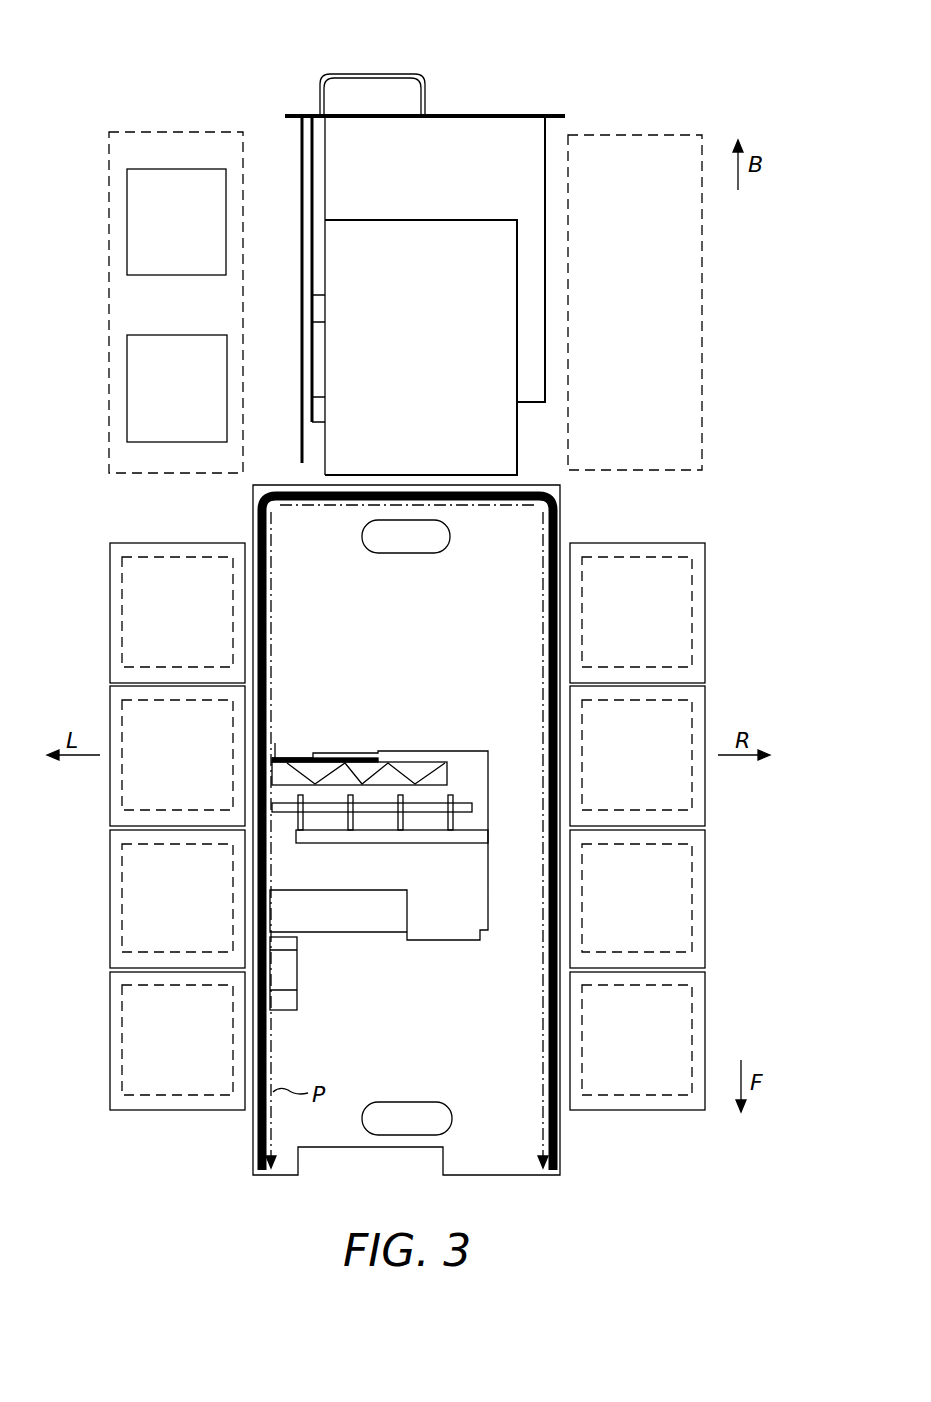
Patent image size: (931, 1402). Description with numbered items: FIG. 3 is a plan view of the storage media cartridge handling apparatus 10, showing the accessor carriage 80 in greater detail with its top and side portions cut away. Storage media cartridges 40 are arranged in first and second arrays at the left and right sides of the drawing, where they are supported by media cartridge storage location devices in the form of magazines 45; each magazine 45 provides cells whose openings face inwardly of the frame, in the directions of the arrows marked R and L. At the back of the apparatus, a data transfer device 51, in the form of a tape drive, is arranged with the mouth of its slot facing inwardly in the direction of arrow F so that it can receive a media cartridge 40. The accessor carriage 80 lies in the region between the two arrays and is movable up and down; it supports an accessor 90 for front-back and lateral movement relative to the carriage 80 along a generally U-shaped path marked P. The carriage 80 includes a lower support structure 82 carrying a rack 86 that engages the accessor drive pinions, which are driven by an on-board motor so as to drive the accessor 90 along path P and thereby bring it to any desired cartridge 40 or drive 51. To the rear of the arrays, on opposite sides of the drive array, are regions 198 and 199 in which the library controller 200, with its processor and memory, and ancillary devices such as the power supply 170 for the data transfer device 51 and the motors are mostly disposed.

The storage media cartridge handling apparatus 10 is at (750, 308).
The storage media cartridge 40 is at (407, 826).
The magazine 45 is at (110, 543).
The data transfer device 51 is at (425, 274).
The accessor carriage 80 is at (380, 1150).
The lower support structure 82 is at (256, 505).
The rack 86 is at (558, 505).
The accessor 90 is at (379, 876).
The power supply 170 is at (186, 275).
The region 198 is at (109, 132).
The region 199 is at (702, 135).
The library controller 200 is at (177, 388).